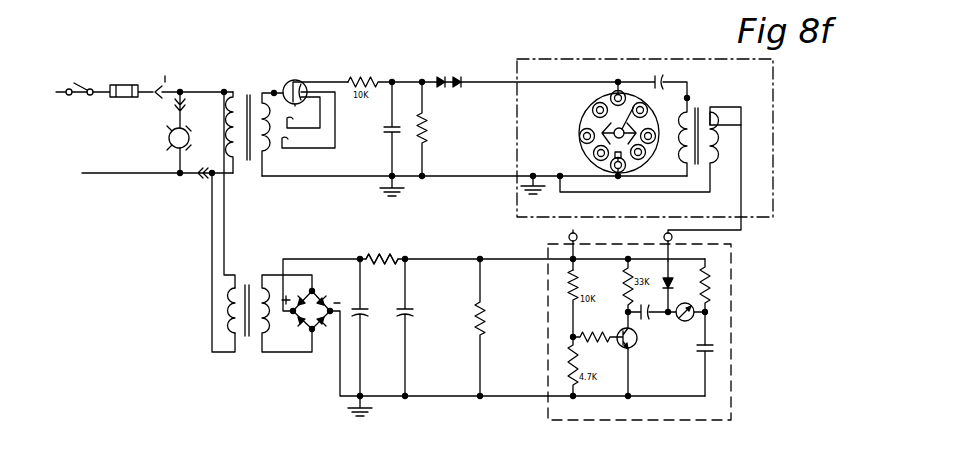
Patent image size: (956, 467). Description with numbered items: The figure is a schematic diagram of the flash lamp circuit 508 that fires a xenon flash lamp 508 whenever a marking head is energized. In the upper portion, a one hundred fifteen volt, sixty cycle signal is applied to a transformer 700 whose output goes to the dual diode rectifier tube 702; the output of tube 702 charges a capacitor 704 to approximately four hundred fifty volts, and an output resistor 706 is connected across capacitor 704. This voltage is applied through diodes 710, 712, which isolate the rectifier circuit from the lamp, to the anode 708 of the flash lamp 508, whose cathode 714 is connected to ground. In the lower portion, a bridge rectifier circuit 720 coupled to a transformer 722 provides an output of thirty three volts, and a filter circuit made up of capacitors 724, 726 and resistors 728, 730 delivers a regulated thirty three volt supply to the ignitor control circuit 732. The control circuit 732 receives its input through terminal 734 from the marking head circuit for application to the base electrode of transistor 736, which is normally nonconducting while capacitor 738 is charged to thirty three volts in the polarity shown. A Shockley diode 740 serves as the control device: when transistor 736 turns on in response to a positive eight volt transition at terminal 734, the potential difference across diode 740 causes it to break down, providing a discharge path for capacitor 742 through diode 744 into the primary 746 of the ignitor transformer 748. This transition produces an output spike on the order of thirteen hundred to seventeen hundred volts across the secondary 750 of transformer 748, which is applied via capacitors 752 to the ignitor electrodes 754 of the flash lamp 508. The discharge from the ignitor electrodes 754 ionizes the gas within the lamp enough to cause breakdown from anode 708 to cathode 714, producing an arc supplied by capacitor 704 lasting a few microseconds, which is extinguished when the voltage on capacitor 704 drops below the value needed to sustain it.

The flash lamp 508 is at (603, 121).
The transformer 700 is at (257, 168).
The dual diode rectifier tube 702 is at (284, 107).
The capacitor 704 is at (384, 136).
The output resistor 706 is at (426, 144).
The anode 708 is at (620, 90).
The diode 710 is at (442, 76).
The diode 712 is at (458, 76).
The cathode 714 is at (625, 165).
The bridge rectifier circuit 720 is at (318, 330).
The transformer 722 is at (247, 283).
The capacitor 724 is at (362, 318).
The capacitor 726 is at (407, 318).
The resistor 728 is at (384, 252).
The resistor 730 is at (492, 296).
The ignitor control circuit 732 is at (742, 252).
The terminal 734 is at (569, 236).
The transistor 736 is at (638, 340).
The capacitor 738 is at (686, 321).
The Shockley diode 740 is at (690, 318).
The capacitor 742 is at (708, 354).
The diode 744 is at (686, 278).
The primary 746 is at (715, 130).
The ignitor transformer 748 is at (697, 111).
The secondary 750 is at (648, 134).
The capacitors 752 is at (596, 157).
The ignitor electrodes 754 is at (580, 134).